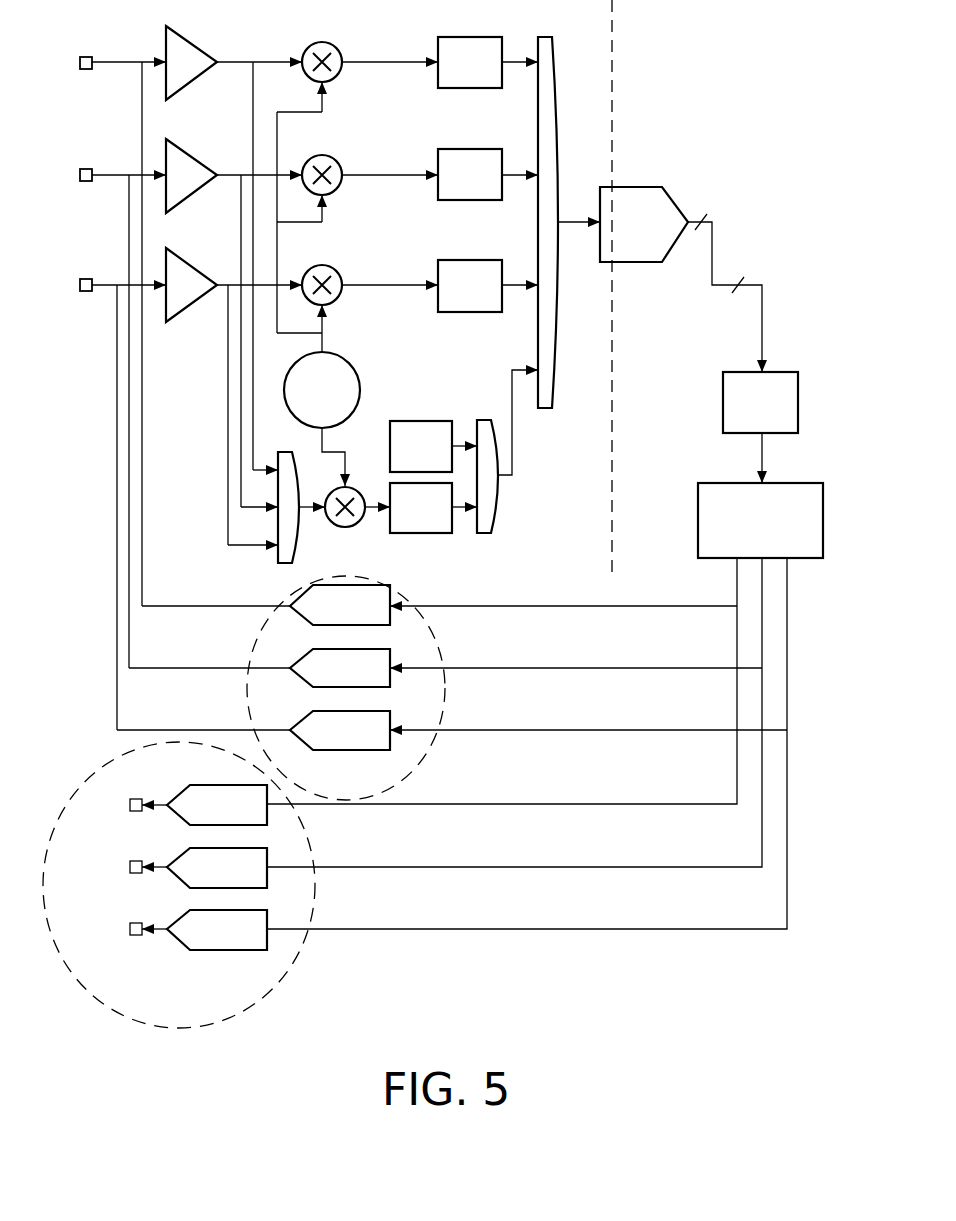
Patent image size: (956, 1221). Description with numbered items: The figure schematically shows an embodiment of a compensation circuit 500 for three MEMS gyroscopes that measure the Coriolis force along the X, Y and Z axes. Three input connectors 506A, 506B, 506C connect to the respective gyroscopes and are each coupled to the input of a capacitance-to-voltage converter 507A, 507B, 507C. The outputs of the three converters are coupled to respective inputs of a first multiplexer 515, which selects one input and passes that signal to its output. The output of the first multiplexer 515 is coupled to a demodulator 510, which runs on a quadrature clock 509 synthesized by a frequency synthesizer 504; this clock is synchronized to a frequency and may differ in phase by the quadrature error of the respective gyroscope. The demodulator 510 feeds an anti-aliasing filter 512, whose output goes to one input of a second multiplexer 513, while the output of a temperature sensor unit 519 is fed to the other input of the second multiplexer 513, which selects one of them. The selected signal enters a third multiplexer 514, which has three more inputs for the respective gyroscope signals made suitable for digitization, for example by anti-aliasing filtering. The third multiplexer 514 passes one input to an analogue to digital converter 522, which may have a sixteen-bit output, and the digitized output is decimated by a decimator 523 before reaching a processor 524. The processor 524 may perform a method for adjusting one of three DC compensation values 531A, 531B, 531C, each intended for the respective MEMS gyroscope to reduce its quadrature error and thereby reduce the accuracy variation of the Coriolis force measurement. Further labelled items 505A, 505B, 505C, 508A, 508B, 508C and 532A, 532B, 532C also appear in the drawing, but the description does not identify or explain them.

The compensation circuit 500 is at (591, 1077).
The frequency synthesizer 504 is at (360, 375).
The X multiplier (mixer) 505A is at (321, 41).
The Y multiplier (mixer) 505B is at (323, 155).
The Z multiplier (mixer) 505C is at (323, 266).
The input connector 506A is at (86, 70).
The input connector 506B is at (86, 182).
The input connector 506C is at (86, 292).
The capacitance-to-voltage converter 507A is at (189, 39).
The capacitance-to-voltage converter 507B is at (189, 150).
The capacitance-to-voltage converter 507C is at (189, 260).
The X input signal line 508A is at (121, 60).
The Y input signal line 508B is at (119, 173).
The Z input signal line 508C is at (115, 283).
The quadrature clock 509 is at (345, 469).
The demodulator 510 is at (351, 527).
The anti-aliasing filter 512 is at (428, 533).
The second multiplexer 513 is at (499, 512).
The third multiplexer 514 is at (537, 345).
The first multiplexer 515 is at (278, 563).
The temperature sensor unit 519 is at (432, 421).
The analogue to digital converter 522 is at (643, 187).
The decimator 523 is at (723, 406).
The processor 524 is at (698, 516).
The DC compensation value 531A is at (737, 773).
The DC compensation value 531B is at (762, 841).
The DC compensation value 531C is at (787, 898).
The X_QCU output terminal 532A is at (130, 806).
The Y_QCU output terminal 532B is at (130, 868).
The Z_QCU output terminal 532C is at (130, 930).